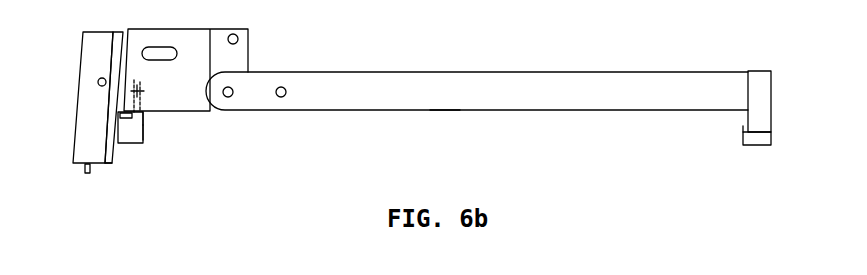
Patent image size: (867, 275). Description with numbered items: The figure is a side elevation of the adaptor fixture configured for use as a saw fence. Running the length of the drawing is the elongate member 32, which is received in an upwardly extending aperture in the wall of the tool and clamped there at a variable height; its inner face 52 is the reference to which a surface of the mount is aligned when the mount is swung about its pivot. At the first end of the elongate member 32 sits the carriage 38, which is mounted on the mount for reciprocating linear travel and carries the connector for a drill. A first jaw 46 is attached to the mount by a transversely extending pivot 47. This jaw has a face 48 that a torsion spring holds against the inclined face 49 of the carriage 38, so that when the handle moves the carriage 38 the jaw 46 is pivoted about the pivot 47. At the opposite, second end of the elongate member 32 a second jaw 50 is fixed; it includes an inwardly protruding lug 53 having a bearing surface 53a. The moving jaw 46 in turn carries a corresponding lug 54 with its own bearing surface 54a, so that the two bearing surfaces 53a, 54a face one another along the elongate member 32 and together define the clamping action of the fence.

The elongate member 32 is at (540, 80).
The carriage 38 is at (98, 70).
The first jaw 46 is at (127, 133).
The pivot 47 is at (140, 92).
The face 48 is at (98, 124).
The inclined face 49 is at (119, 161).
The second jaw 50 is at (772, 130).
The inner face 52 is at (448, 117).
The lug 53 is at (750, 140).
The bearing surface 53a is at (735, 126).
The lug 54 is at (149, 133).
The bearing surface 54a is at (154, 121).